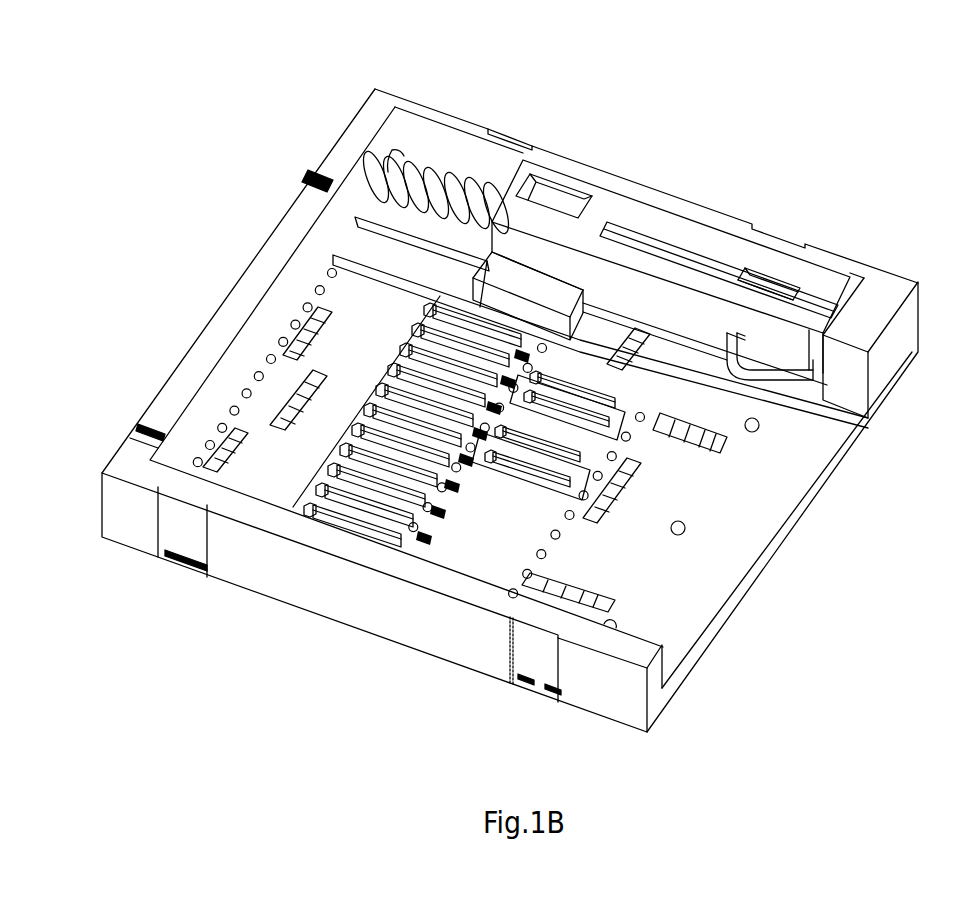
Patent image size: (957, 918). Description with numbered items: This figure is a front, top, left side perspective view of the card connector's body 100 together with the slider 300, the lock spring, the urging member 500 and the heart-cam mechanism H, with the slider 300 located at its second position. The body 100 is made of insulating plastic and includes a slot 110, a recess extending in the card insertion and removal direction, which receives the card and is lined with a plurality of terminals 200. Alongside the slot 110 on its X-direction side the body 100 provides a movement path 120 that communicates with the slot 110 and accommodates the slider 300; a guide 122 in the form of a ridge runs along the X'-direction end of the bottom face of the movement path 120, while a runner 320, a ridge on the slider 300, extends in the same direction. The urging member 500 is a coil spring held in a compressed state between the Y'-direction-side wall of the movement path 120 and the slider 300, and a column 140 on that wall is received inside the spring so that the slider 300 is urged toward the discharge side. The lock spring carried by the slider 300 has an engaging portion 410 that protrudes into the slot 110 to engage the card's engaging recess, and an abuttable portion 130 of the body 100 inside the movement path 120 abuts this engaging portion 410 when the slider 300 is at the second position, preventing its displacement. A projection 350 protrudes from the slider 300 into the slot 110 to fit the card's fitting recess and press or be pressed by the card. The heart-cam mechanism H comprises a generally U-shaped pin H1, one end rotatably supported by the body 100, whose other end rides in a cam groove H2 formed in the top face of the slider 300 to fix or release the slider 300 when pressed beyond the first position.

The body 100 is at (359, 598).
The slot 110 is at (742, 519).
The movement path 120 is at (472, 160).
The guide 122 is at (356, 220).
The abuttable portion 130 is at (856, 362).
The column 140 is at (420, 178).
The terminals 200 is at (318, 507).
The slider 300 is at (602, 207).
The runner 320 is at (655, 323).
The projection 350 is at (543, 292).
The engaging portion 410 is at (762, 374).
The urging member 500 is at (396, 150).
The heart-cam mechanism H is at (800, 169).
The pin H1 is at (768, 275).
The cam groove H2 is at (708, 262).